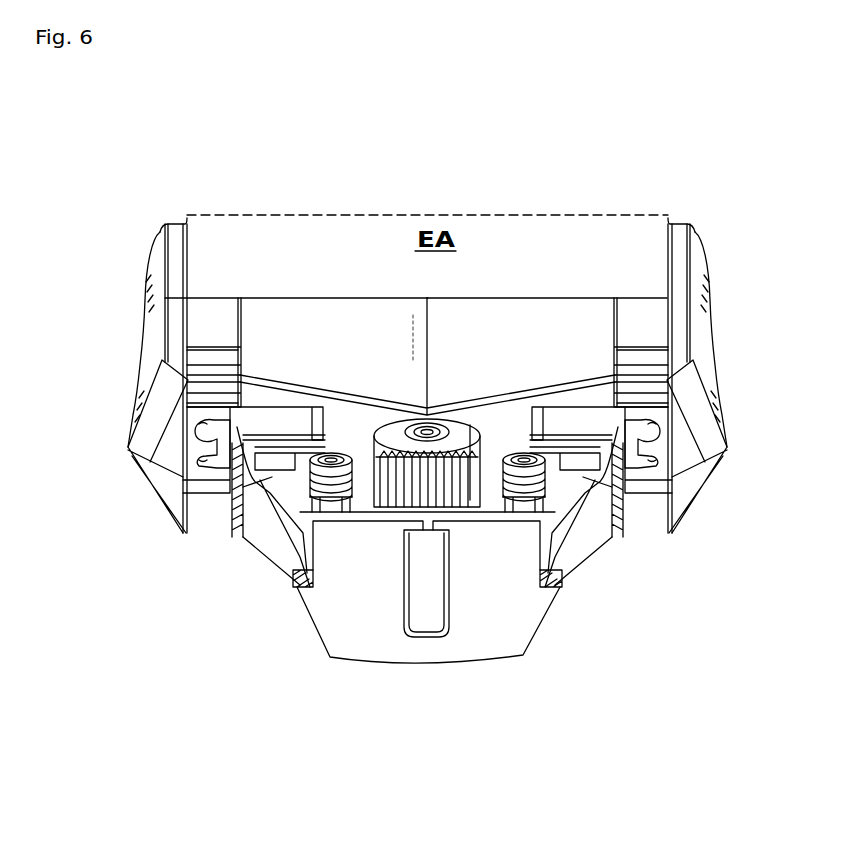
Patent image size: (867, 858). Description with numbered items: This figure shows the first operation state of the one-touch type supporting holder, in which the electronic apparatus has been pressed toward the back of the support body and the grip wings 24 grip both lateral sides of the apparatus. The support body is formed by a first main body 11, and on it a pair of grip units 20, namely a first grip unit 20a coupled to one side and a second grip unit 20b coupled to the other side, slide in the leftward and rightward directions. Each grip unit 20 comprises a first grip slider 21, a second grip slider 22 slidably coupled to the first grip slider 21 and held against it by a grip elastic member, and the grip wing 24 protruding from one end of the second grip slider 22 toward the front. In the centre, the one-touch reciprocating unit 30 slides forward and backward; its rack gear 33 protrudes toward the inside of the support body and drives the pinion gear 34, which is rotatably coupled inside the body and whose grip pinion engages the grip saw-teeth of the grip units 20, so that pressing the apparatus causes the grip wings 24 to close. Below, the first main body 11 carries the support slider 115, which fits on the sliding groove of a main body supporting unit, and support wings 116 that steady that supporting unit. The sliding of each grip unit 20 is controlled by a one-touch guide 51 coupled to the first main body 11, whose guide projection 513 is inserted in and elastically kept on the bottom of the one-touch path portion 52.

The grip unit 20 is at (419, 334).
The first grip unit 20a is at (151, 240).
The second grip unit 20b is at (697, 228).
The first grip slider 21 is at (217, 347).
The second grip slider 22 is at (197, 353).
The grip wing 24 is at (143, 367).
The one-touch reciprocating unit 30 is at (470, 303).
The rack gear 33 is at (478, 500).
The pinion gear 34 is at (397, 415).
The first main body 11 is at (367, 650).
The support slider 115 is at (430, 625).
The support wing 116 is at (307, 587).
The one-touch guide 51 is at (303, 487).
The one-touch path portion 52 is at (222, 458).
The guide projection 513 is at (237, 537).